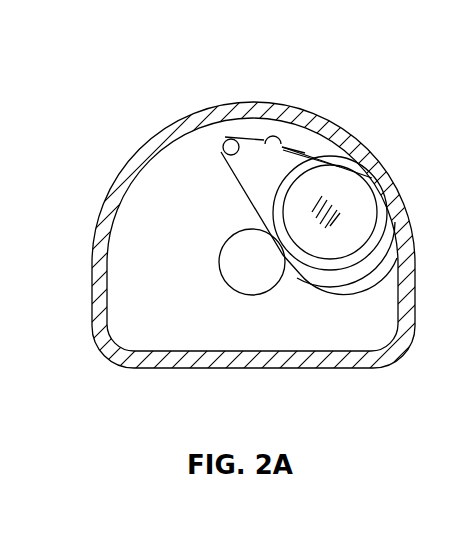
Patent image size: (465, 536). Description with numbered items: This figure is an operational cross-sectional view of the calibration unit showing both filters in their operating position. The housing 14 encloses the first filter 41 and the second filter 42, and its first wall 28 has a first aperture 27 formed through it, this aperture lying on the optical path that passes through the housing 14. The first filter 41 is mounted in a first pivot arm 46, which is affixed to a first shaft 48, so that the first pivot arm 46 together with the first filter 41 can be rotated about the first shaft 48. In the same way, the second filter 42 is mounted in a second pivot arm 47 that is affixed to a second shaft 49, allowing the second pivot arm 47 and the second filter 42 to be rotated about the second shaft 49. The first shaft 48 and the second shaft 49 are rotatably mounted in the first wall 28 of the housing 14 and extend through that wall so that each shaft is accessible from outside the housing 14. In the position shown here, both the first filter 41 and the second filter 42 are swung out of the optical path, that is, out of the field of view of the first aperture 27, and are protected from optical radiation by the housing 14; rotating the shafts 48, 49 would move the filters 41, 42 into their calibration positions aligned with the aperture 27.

The housing 14 is at (346, 131).
The first aperture 27 is at (220, 257).
The first wall 28 is at (130, 313).
The first filter 41 is at (348, 193).
The second filter 42 is at (377, 253).
The first pivot arm 46 is at (237, 175).
The second pivot arm 47 is at (288, 143).
The first shaft 48 is at (225, 140).
The second shaft 49 is at (268, 139).